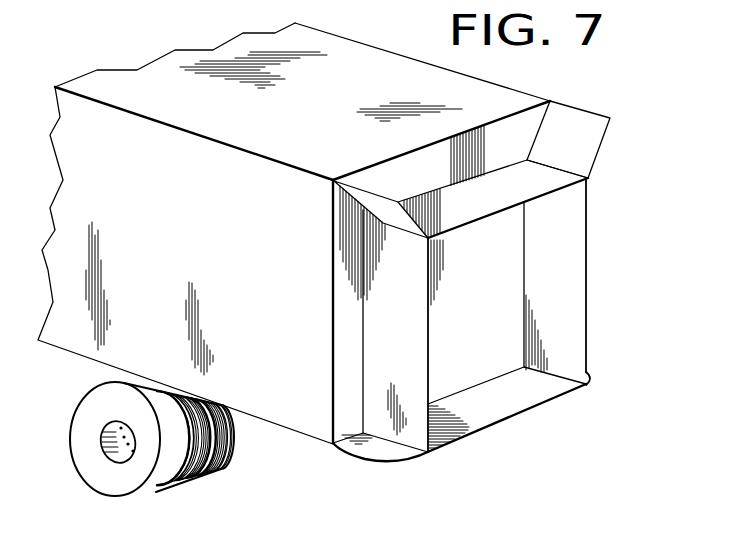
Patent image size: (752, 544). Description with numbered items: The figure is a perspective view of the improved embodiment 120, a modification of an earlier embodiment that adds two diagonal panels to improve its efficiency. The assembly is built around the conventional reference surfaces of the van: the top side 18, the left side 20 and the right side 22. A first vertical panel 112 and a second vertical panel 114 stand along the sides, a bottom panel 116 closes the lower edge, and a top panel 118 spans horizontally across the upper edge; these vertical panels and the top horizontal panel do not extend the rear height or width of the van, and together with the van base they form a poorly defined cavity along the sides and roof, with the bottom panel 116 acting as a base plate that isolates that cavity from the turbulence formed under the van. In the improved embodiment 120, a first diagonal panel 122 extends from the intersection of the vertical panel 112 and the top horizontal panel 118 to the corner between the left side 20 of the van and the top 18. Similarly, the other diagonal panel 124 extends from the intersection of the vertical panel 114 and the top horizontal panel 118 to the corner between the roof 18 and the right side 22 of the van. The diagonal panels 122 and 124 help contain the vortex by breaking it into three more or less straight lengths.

The top side 18 is at (317, 112).
The left side 20 is at (190, 260).
The right side 22 is at (521, 84).
The first vertical panel 112 is at (408, 341).
The second vertical panel 114 is at (570, 291).
The bottom panel 116 is at (498, 414).
The top panel 118 is at (495, 207).
The improved embodiment 120 is at (620, 200).
The first diagonal panel 122 is at (385, 213).
The other diagonal panel 124 is at (579, 145).